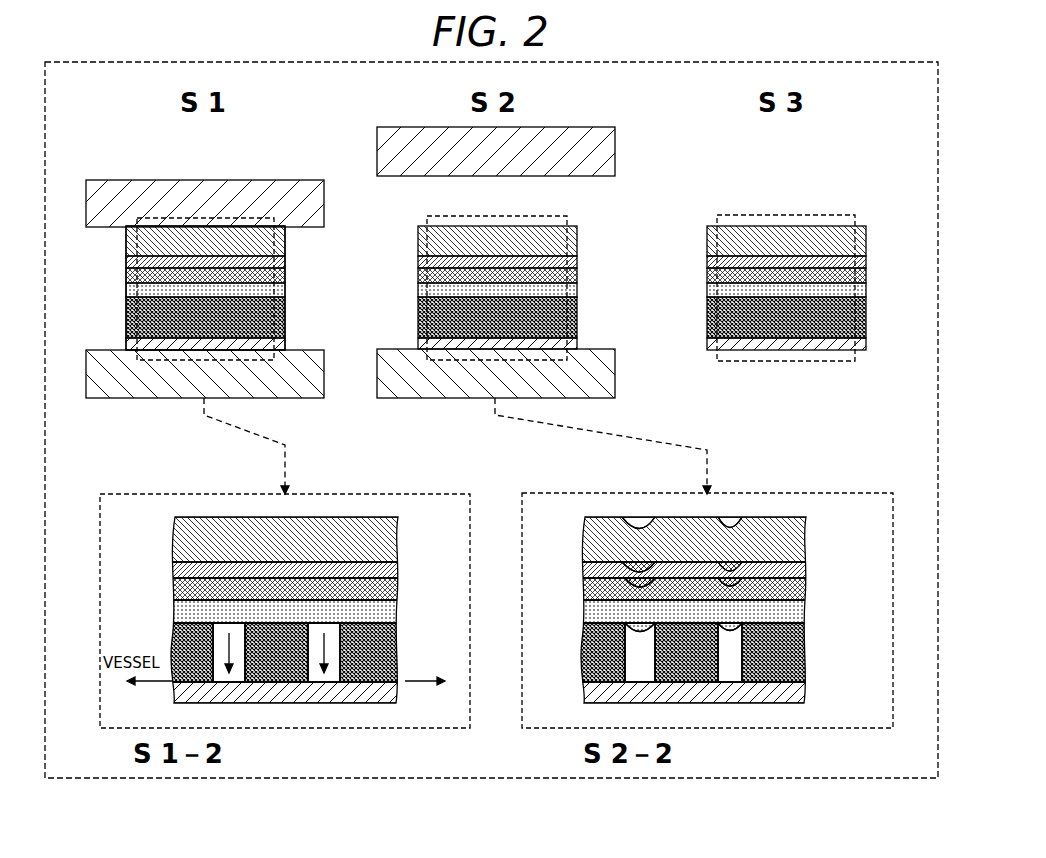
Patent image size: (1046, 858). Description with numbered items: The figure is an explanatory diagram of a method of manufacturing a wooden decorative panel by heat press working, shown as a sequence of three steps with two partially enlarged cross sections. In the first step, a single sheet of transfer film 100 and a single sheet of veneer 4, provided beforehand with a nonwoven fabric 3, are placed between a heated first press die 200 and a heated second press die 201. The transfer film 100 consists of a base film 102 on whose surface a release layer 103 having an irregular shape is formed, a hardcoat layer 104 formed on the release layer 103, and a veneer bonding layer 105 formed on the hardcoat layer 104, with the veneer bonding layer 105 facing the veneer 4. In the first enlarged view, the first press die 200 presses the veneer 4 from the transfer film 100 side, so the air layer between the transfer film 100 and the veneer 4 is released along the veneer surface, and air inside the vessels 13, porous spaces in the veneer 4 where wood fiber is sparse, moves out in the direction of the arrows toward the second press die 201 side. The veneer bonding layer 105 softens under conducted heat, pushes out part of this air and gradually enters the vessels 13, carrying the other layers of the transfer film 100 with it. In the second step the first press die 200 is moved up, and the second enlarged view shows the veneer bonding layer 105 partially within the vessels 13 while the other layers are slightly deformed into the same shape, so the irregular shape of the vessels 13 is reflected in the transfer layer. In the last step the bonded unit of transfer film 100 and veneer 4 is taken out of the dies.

The first press die 200 is at (286, 224).
The second press die 201 is at (126, 398).
The transfer film 100 is at (126, 297).
The base film 102 is at (285, 241).
The release layer 103 is at (285, 262).
The hardcoat layer 104 is at (285, 276).
The veneer bonding layer 105 is at (285, 290).
The veneer 4 is at (126, 316).
The nonwoven fabric 3 is at (126, 345).
The vessels 13 is at (218, 646).